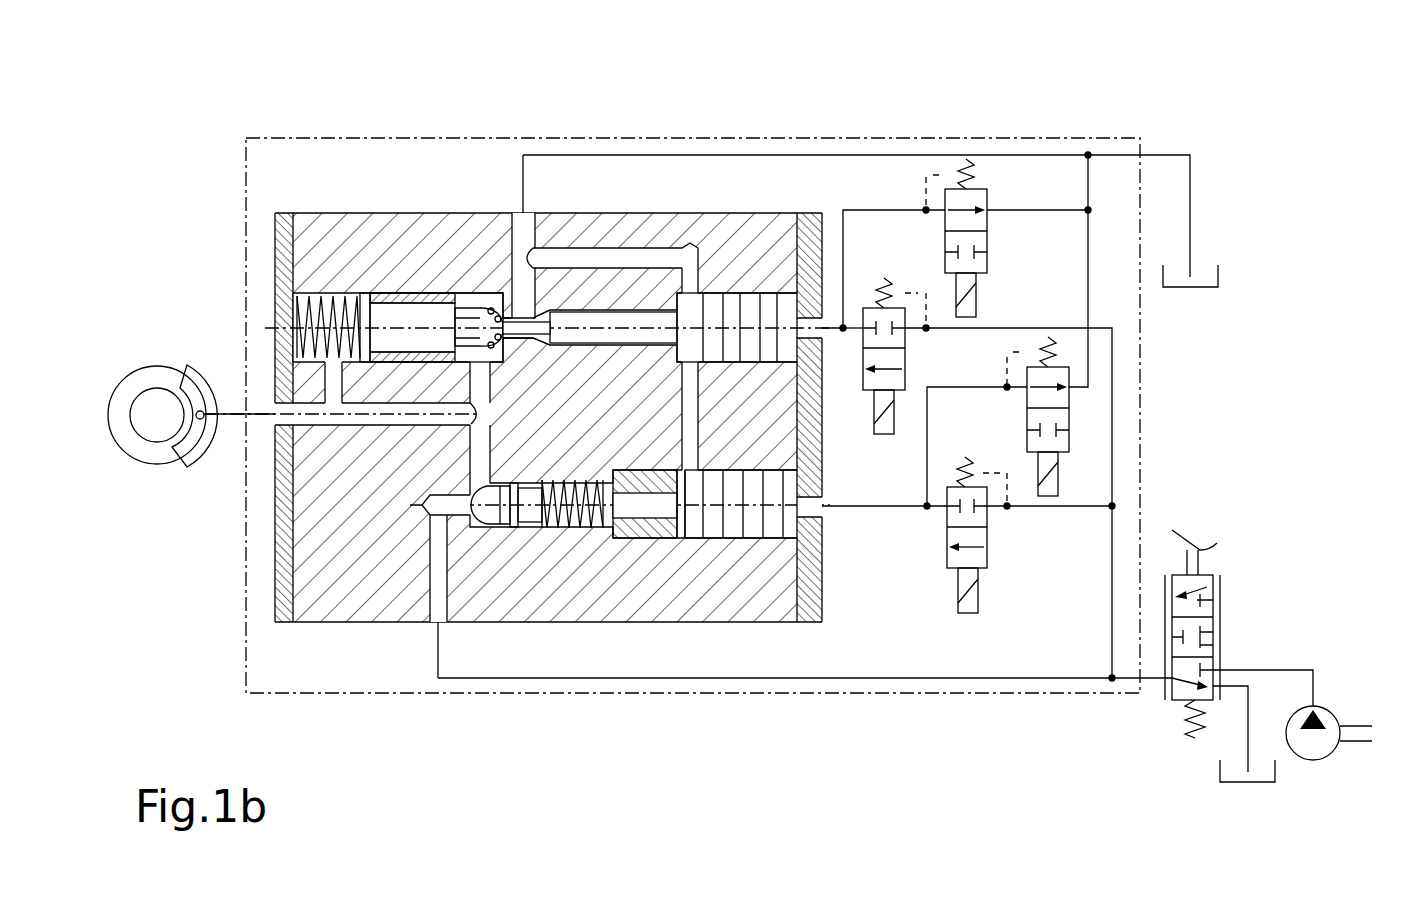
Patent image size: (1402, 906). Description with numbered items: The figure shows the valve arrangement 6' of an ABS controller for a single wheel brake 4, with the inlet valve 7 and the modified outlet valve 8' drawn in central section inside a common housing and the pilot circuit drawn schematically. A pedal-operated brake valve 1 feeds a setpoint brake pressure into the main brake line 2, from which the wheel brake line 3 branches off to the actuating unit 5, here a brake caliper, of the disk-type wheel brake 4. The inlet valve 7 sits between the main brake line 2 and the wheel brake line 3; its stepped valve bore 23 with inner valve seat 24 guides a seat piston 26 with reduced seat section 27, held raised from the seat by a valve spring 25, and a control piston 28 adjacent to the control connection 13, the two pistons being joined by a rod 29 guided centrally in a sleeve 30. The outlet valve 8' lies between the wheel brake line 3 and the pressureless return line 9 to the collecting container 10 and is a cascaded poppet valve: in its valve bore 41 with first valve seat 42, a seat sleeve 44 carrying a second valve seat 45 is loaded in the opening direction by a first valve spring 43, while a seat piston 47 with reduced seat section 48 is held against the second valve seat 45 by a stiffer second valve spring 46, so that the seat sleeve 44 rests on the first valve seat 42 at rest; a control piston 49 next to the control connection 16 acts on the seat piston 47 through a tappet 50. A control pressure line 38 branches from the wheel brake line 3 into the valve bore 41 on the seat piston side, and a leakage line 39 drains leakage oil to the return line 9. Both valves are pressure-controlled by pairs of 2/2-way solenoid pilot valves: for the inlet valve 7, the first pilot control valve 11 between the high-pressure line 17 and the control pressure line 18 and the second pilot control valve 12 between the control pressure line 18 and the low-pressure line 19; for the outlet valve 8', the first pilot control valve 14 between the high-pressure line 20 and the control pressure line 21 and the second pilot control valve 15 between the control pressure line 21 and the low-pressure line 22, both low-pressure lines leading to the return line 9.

The brake valve 1 is at (1250, 626).
The main brake line 2 is at (890, 680).
The wheel brake line 3 is at (232, 420).
The wheel brake 4 is at (131, 495).
The actuating unit 5 is at (192, 443).
The valve arrangement 6' is at (749, 415).
The inlet valve 7 is at (559, 575).
The outlet valve 8' is at (417, 212).
The return line 9 is at (1190, 200).
The collecting container 10 is at (1220, 275).
The first pilot control valve 11 is at (990, 537).
The second pilot control valve 12 is at (1068, 418).
The control connection 13 is at (827, 503).
The first pilot control valve 14 is at (905, 342).
The second pilot control valve 15 is at (990, 222).
The control connection 16 is at (828, 322).
The high-pressure line 17 is at (1098, 508).
The control pressure line 18 is at (882, 508).
The low-pressure line 19 is at (1090, 360).
The high-pressure line 20 is at (1012, 327).
The control pressure line 21 is at (858, 312).
The low-pressure line 22 is at (1037, 208).
The valve bore 23 is at (678, 530).
The valve seat 24 is at (462, 550).
The valve spring 25 is at (575, 532).
The seat piston 26 is at (535, 518).
The seat section 27 is at (497, 518).
The control piston 28 is at (753, 518).
The rod 29 is at (658, 529).
The sleeve 30 is at (643, 514).
The control pressure line 38 is at (328, 378).
The leakage line 39 is at (638, 257).
The valve bore 41 is at (521, 233).
The first valve seat 42 is at (509, 268).
The first valve spring 43 is at (452, 306).
The seat sleeve 44 is at (400, 297).
The second valve seat 45 is at (478, 317).
The second valve spring 46 is at (321, 290).
The seat piston 47 is at (387, 317).
The seat section 48 is at (489, 264).
The control piston 49 is at (752, 310).
The tappet 50 is at (590, 317).